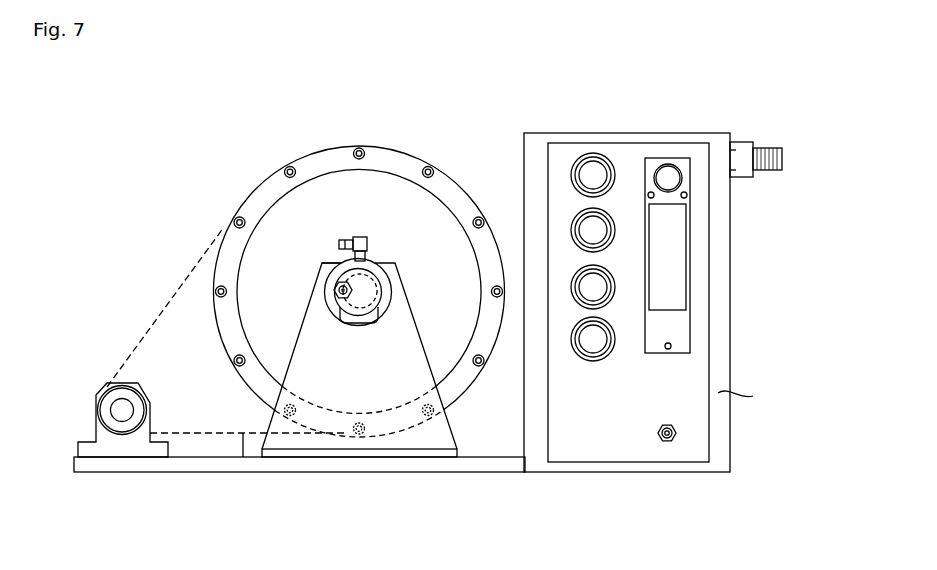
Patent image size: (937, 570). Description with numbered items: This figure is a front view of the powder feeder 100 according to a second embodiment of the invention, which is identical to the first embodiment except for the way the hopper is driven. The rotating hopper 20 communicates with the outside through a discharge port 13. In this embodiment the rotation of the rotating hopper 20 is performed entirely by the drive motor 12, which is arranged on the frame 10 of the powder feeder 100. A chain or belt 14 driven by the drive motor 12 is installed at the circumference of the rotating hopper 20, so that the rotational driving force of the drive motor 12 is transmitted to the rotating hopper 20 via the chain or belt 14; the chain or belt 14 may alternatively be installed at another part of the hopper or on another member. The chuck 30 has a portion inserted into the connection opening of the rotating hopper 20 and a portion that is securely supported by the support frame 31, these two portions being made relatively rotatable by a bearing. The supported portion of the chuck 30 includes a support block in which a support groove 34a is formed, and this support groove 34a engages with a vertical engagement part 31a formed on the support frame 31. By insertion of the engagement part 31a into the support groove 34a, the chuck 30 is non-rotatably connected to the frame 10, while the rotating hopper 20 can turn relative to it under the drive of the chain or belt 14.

The powder feeder 100 is at (234, 151).
The discharge port 13 is at (348, 239).
The rotating hopper 20 is at (410, 151).
The vertical engagement part 31a is at (337, 250).
The chuck 30 is at (322, 298).
The support groove 34a is at (328, 310).
The drive motor 12 is at (110, 423).
The chain or belt 14 is at (242, 455).
The support frame 31 is at (399, 442).
The frame 10 is at (479, 466).